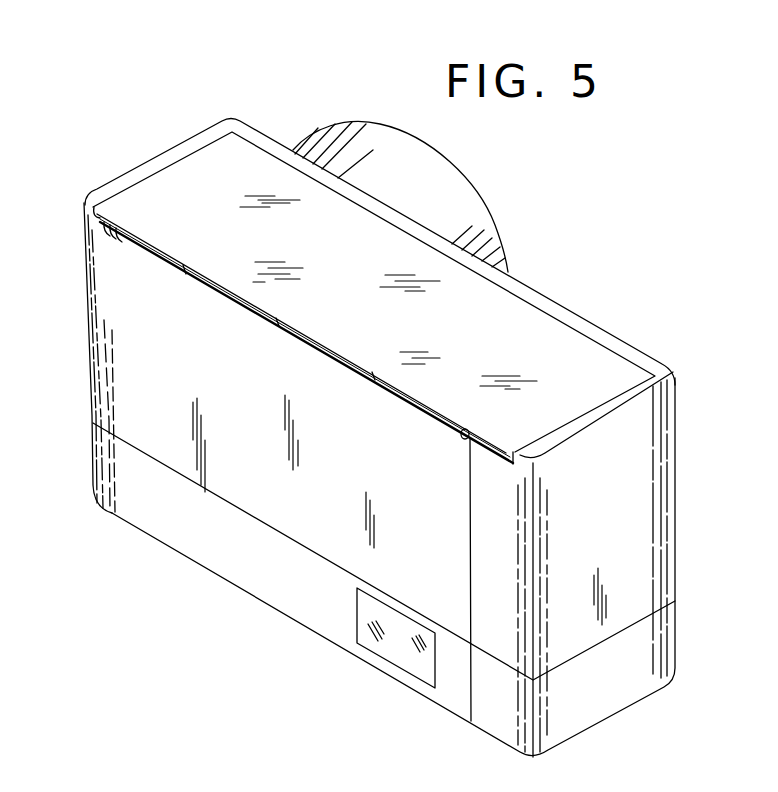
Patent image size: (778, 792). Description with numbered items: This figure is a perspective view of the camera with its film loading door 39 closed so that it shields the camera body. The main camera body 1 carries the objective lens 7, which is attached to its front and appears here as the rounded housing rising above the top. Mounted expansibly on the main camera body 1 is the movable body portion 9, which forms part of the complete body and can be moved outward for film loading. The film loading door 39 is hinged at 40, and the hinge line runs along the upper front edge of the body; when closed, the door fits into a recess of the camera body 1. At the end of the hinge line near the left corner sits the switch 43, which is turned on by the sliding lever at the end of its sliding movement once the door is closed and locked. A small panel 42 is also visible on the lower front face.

The main camera body 1 is at (82, 373).
The objective lens 7 is at (473, 226).
The movable body portion 9 is at (690, 518).
The film loading door 39 is at (275, 282).
The hinge 40 is at (327, 357).
The inspection window 42 is at (370, 645).
The switch 43 is at (100, 233).